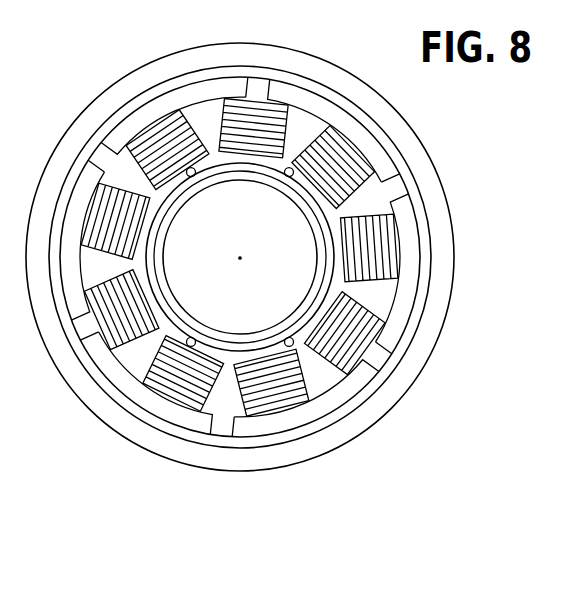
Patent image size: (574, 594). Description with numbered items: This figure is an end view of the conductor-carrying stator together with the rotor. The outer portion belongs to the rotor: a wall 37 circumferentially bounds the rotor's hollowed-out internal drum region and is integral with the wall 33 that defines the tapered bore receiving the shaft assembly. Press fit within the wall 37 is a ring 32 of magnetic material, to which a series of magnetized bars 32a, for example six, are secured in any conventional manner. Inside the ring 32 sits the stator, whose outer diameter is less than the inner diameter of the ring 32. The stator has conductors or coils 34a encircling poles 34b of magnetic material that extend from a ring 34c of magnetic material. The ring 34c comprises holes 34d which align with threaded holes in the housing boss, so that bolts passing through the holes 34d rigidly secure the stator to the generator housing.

The ring 32 is at (423, 255).
The magnetized bars 32a is at (410, 292).
The wall 33 is at (318, 232).
The conductors or coils 34a is at (358, 335).
The poles 34b is at (327, 187).
The ring 34c is at (336, 284).
The holes 34d is at (270, 347).
The wall 37 is at (422, 163).